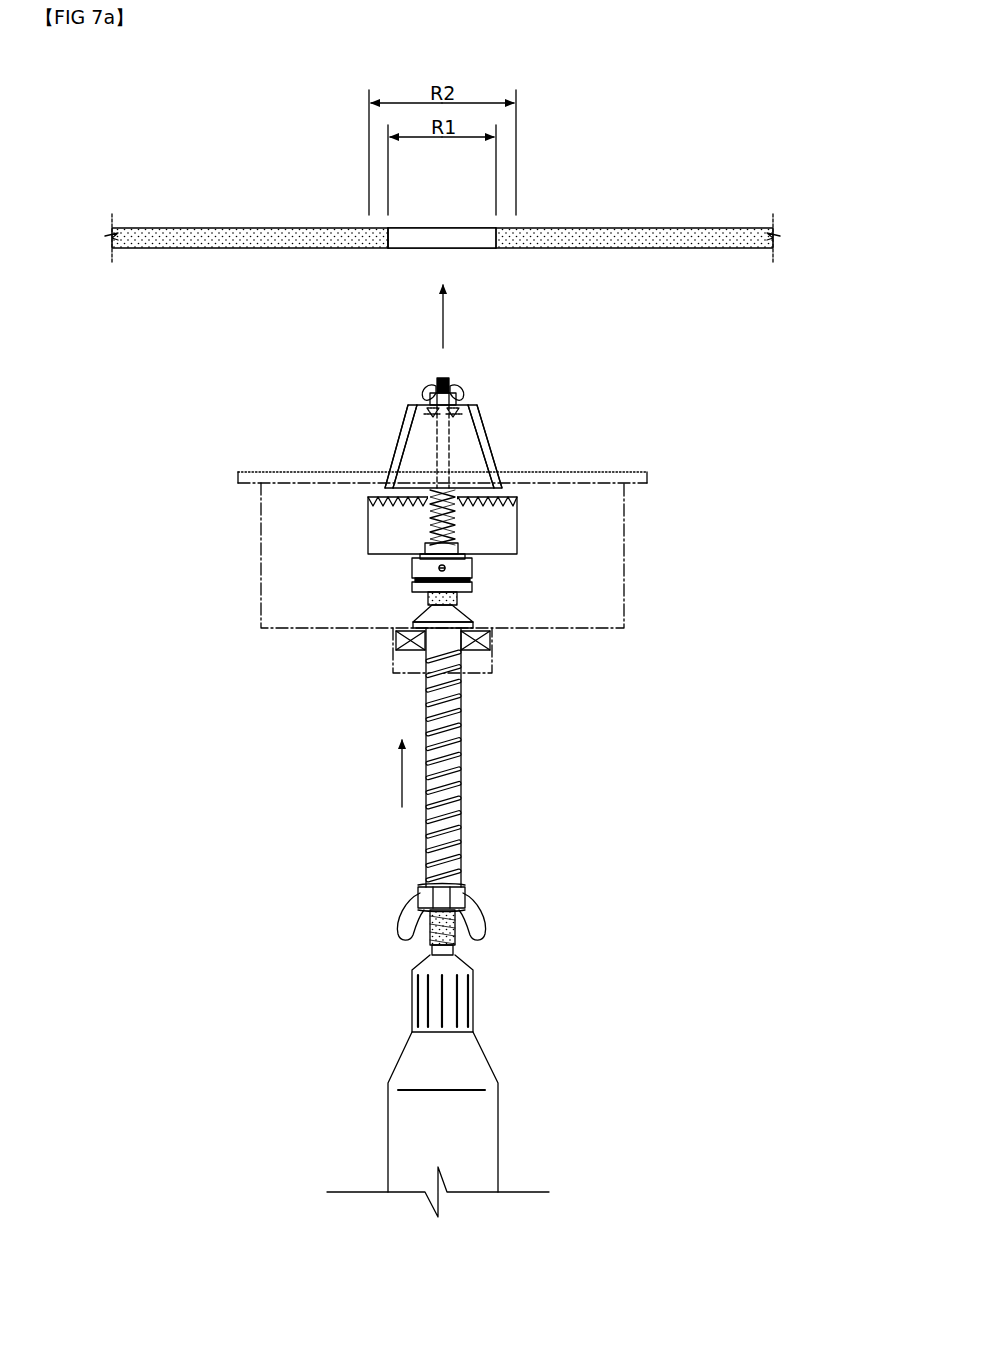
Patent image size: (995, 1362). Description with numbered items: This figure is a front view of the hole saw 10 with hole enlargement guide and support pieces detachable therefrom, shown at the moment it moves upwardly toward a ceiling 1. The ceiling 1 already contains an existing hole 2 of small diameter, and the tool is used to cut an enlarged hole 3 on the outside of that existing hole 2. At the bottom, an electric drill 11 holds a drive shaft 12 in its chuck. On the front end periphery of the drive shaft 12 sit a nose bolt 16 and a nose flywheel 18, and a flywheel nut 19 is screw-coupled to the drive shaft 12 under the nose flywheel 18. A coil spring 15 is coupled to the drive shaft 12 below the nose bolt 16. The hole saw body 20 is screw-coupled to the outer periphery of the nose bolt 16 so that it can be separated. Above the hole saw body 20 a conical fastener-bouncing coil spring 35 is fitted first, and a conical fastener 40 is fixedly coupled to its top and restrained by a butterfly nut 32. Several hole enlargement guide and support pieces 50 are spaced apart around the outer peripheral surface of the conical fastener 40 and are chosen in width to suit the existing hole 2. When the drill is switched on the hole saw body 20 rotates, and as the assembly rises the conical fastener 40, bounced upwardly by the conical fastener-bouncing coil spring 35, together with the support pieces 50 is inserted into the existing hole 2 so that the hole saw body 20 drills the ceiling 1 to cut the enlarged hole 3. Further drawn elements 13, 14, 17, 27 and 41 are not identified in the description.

The ceiling 1 is at (647, 240).
The existing hole 2 is at (390, 238).
The enlarged hole 3 is at (386, 233).
The hole saw 10 is at (537, 408).
The electric drill 11 is at (396, 1137).
The drive shaft 12 is at (455, 763).
The threaded stud 13 is at (430, 940).
The wing nut coupler 14 is at (474, 919).
The coil spring 15 is at (462, 816).
The nose bolt 16 is at (428, 600).
The tapered adapter 17 is at (470, 611).
The nose flywheel 18 is at (472, 565).
The flywheel nut 19 is at (412, 586).
The hole saw body 20 is at (388, 529).
The bearing box 27 is at (494, 648).
The butterfly nut 32 is at (420, 382).
The conical fastener-bouncing coil spring 35 is at (457, 514).
The conical fastener 40 is at (478, 417).
The anchor bolt 41 is at (436, 425).
The hole enlargement guide and support pieces 50 is at (400, 437).